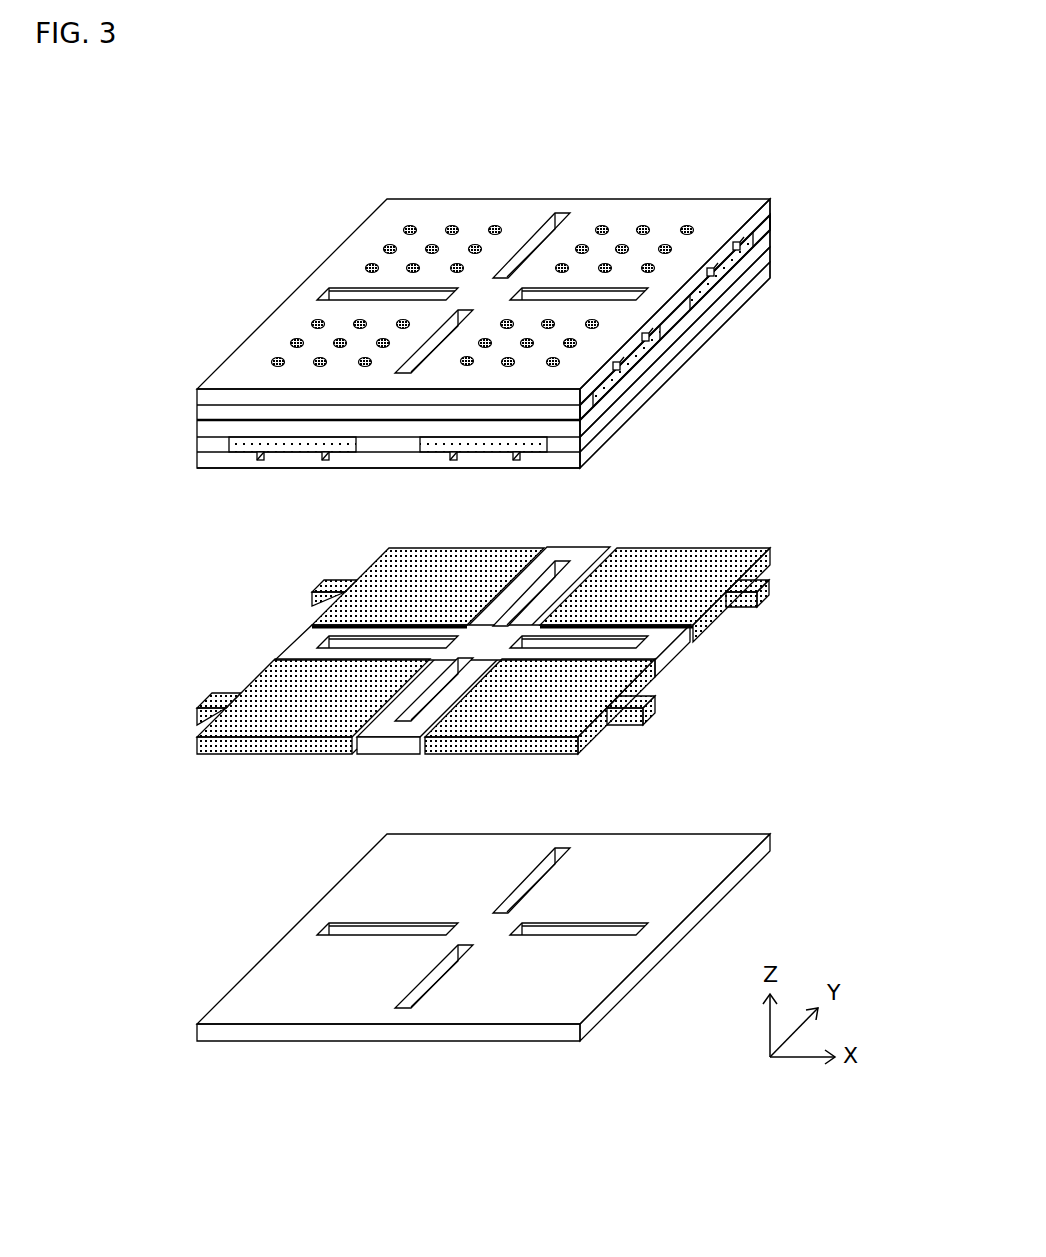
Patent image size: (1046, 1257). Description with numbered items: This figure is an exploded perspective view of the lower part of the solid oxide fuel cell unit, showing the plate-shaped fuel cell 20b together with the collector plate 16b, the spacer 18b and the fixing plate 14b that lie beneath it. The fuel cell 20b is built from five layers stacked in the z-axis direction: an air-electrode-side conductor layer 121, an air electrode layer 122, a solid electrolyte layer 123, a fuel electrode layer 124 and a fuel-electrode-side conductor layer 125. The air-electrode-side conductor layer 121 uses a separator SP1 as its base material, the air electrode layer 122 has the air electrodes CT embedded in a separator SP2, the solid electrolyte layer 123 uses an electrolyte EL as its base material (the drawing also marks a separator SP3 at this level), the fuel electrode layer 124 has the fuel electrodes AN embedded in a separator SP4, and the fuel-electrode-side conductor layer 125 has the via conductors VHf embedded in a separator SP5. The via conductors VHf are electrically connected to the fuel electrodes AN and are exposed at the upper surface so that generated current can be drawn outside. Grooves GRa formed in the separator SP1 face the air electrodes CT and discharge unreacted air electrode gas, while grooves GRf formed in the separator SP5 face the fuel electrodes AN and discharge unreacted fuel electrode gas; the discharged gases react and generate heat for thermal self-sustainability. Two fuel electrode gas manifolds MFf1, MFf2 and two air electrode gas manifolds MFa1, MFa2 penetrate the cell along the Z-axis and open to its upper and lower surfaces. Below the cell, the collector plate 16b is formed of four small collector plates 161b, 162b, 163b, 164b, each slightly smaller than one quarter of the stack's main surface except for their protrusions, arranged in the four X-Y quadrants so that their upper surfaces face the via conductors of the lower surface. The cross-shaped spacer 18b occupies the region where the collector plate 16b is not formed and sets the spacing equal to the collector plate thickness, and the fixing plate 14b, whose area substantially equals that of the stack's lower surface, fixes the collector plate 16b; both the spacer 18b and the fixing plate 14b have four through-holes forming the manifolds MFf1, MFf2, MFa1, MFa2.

The fuel cell 20b is at (213, 232).
The separator SP1 is at (197, 458).
The separator SP2 is at (197, 446).
The sheet layer SP3 is at (197, 430).
The separator SP4 is at (197, 409).
The separator SP5 is at (197, 396).
The air-electrode-side conductor layer 121 is at (776, 268).
The air electrode layer 122 is at (776, 253).
The solid electrolyte layer 123 is at (776, 236).
The fuel electrode layer 124 is at (776, 222).
The fuel-electrode-side conductor layer 125 is at (776, 205).
The grooves GRa is at (300, 453).
The grooves GRf is at (627, 374).
The air electrodes CT is at (325, 461).
The fuel electrodes AN is at (710, 278).
The electrolyte EL is at (613, 396).
The via conductors VHf is at (494, 224).
The manifold MFf1 is at (551, 224).
The manifold MFf2 is at (420, 350).
The manifold MFa1 is at (578, 291).
The manifold MFa2 is at (380, 295).
The collector plate 16b is at (466, 631).
The small collector plate 161b is at (673, 557).
The small collector plate 162b is at (392, 572).
The small collector plate 163b is at (265, 698).
The small collector plate 164b is at (597, 700).
The spacer 18b is at (683, 650).
The fixing plate 14b is at (270, 970).